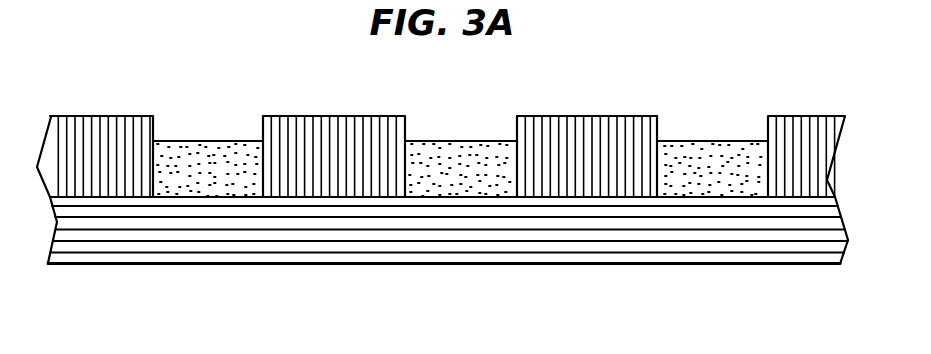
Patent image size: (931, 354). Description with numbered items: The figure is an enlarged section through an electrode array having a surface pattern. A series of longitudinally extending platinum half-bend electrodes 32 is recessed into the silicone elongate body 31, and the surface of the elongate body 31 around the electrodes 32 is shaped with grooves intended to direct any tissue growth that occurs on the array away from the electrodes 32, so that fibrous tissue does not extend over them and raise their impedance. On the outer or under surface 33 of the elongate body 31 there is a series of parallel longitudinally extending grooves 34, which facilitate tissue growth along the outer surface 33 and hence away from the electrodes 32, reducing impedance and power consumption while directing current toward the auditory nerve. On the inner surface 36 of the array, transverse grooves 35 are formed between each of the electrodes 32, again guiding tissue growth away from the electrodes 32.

The elongate body 31 is at (567, 230).
The electrodes 32 is at (470, 156).
The outer surface 33 is at (492, 257).
The longitudinally extending grooves 34 is at (657, 255).
The transverse grooves 35 is at (595, 146).
The inner surface 36 is at (563, 117).